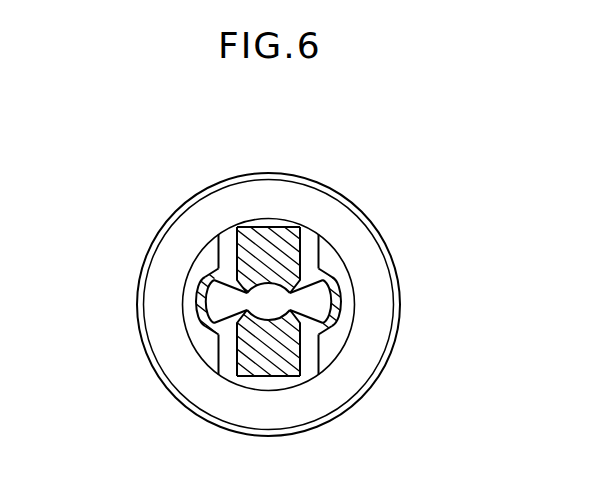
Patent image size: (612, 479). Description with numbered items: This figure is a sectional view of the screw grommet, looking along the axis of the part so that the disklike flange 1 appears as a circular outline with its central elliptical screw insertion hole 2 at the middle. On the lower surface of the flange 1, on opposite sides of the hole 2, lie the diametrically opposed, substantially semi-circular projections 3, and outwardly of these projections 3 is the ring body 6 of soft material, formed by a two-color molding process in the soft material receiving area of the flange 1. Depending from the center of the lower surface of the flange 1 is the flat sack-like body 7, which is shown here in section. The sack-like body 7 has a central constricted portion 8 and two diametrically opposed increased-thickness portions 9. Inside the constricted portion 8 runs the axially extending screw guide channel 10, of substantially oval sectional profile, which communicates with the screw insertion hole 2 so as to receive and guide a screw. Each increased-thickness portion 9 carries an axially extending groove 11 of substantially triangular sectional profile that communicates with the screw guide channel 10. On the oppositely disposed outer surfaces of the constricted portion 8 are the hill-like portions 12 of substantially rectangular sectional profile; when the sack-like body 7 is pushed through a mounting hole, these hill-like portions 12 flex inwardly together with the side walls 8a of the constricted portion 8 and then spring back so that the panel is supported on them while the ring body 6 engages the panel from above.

The disklike flange 1 is at (275, 172).
The screw insertion hole 2 is at (240, 372).
The semi-circular projections 3 is at (211, 248).
The ring body 6 is at (318, 202).
The sack-like body 7 is at (337, 316).
The constricted portion 8 is at (305, 363).
The side walls 8a is at (244, 229).
The increased-thickness portions 9 is at (336, 298).
The screw guide channel 10 is at (274, 290).
The groove 11 is at (331, 290).
The hill-like portions 12 is at (316, 244).